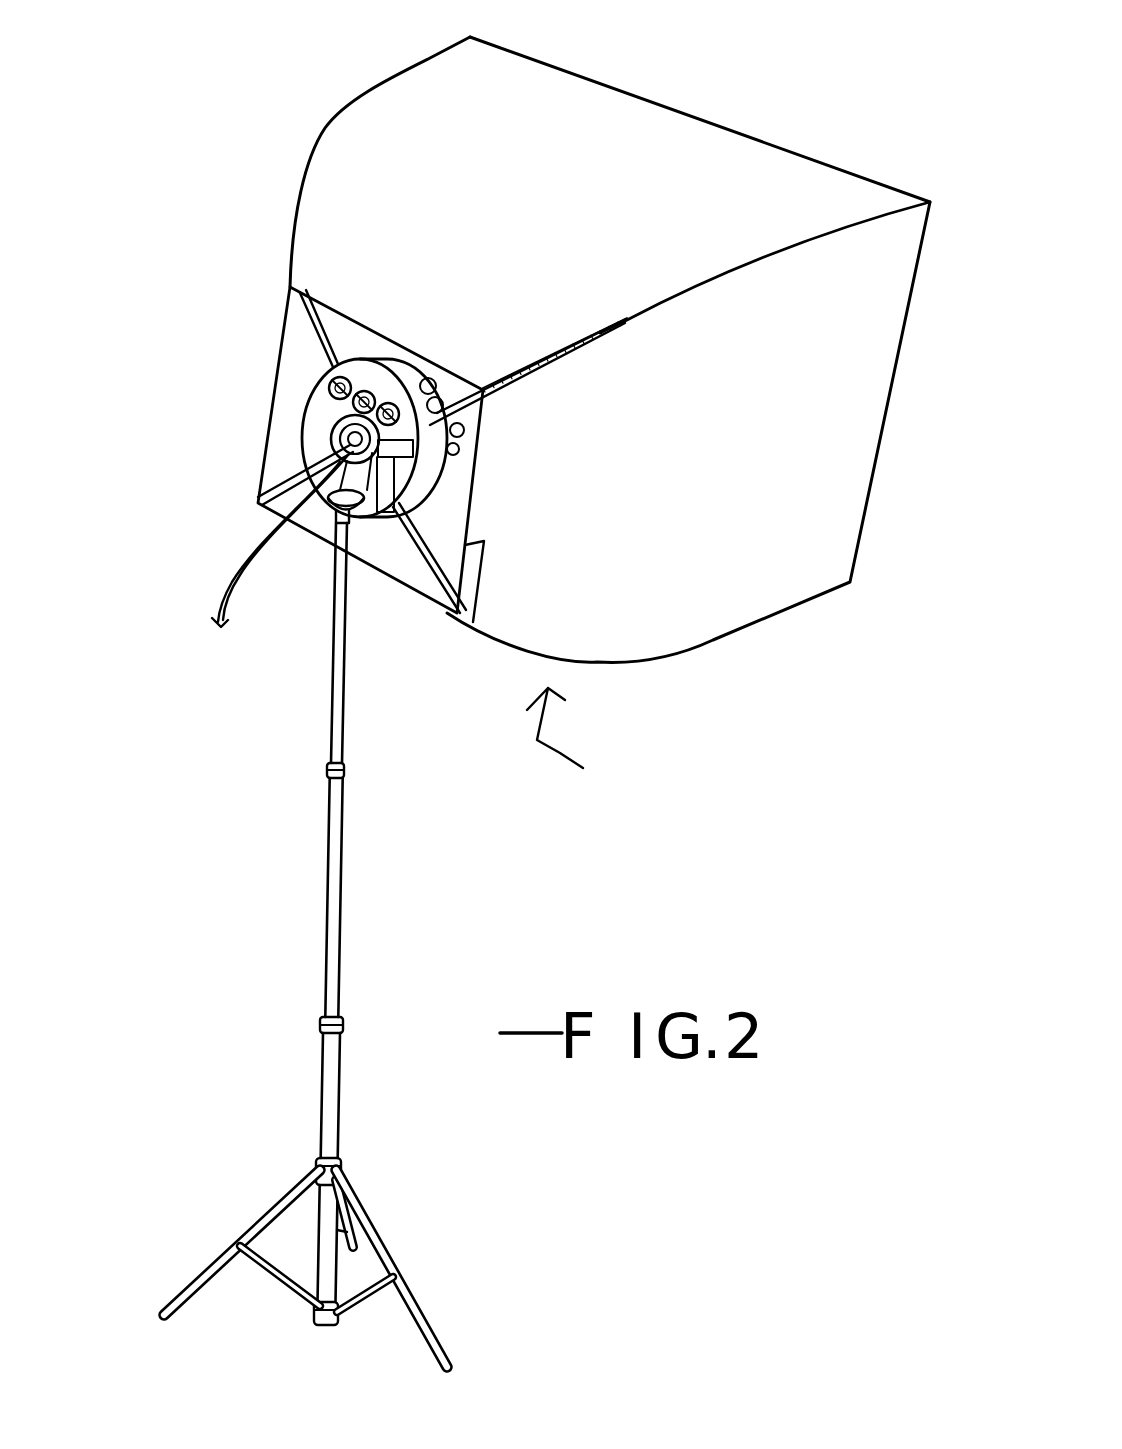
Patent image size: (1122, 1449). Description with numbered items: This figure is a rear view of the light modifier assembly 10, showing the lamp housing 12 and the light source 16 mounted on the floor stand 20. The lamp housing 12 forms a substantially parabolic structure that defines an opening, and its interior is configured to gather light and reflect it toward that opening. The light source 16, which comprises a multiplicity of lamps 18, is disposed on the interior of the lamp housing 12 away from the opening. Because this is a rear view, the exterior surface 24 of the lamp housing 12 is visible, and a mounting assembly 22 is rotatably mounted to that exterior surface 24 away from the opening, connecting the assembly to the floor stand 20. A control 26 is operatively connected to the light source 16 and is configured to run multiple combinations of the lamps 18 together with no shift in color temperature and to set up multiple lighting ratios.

The light modifier assembly 10 is at (591, 742).
The lamp housing 12 is at (517, 52).
The light source 16 is at (313, 413).
The lamps 18 is at (460, 430).
The floor stand 20 is at (342, 858).
The mounting assembly 22 is at (337, 437).
The exterior surface 24 is at (530, 188).
The control 26 is at (340, 377).